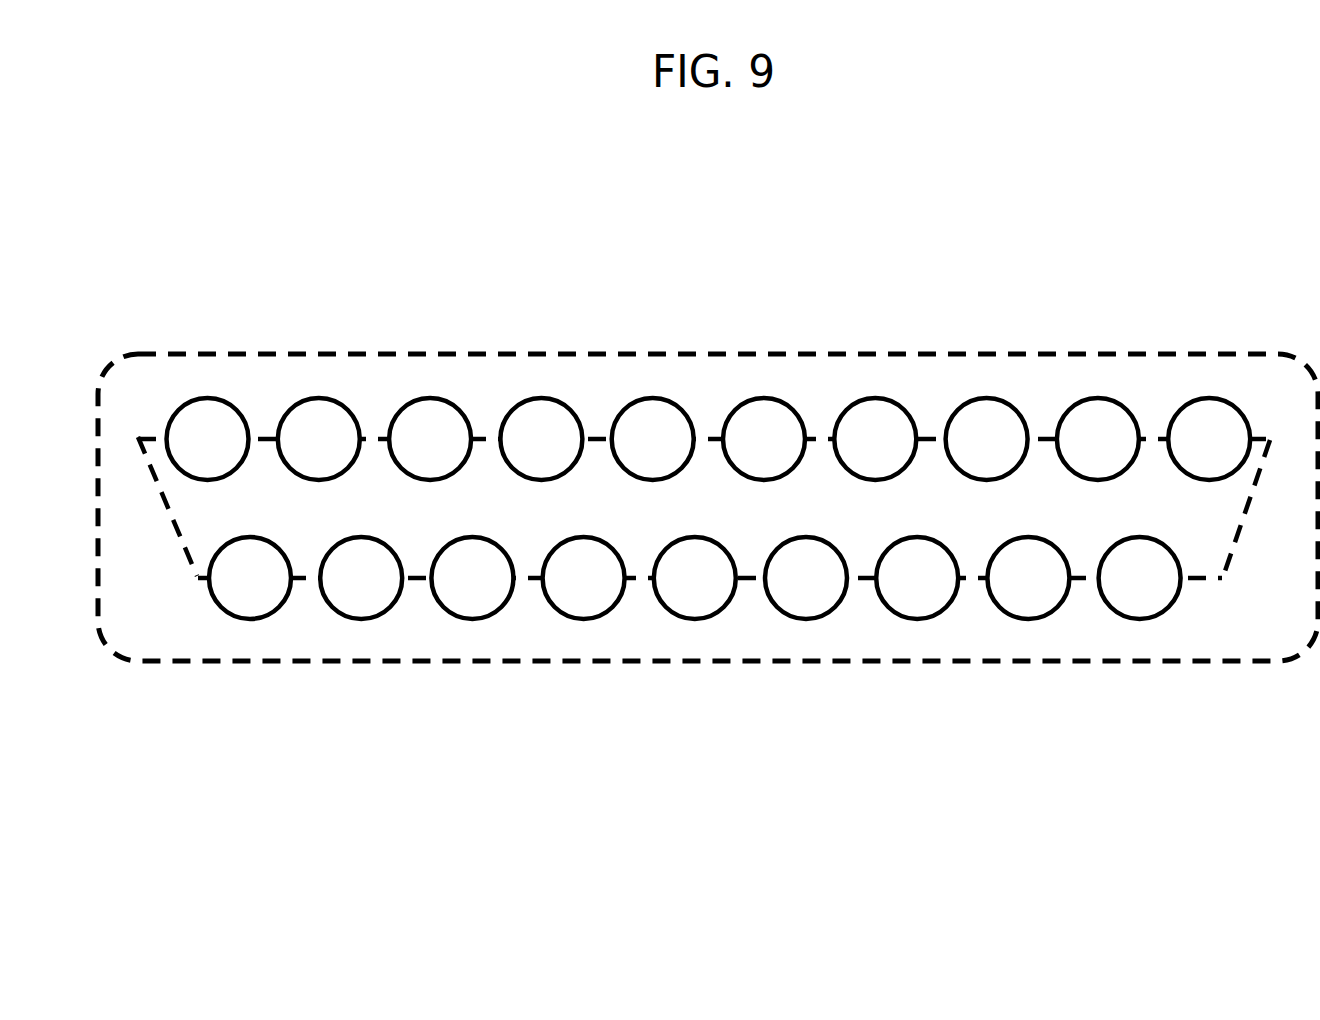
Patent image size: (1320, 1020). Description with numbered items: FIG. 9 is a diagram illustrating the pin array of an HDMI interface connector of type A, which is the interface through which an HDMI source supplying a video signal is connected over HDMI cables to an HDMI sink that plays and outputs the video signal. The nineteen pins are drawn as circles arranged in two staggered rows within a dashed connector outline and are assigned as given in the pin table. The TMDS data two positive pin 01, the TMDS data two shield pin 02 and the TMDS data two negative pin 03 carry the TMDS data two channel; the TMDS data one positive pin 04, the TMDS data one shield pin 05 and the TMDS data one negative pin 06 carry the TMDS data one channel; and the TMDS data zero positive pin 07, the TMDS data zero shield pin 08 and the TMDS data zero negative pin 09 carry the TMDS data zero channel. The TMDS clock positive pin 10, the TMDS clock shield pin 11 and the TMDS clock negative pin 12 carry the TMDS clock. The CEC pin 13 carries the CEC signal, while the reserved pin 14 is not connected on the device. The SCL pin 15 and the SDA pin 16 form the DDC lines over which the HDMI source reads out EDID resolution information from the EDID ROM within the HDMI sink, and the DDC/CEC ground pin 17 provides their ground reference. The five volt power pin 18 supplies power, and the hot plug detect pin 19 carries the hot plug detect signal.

The TMDS DATA 2+ pin 01 is at (1209, 439).
The TMDS DATA 2 SHIELD pin 02 is at (1140, 578).
The TMDS DATA 2− pin 03 is at (1098, 439).
The TMDS DATA 1+ pin 04 is at (1028, 578).
The TMDS DATA 1 SHIELD pin 05 is at (987, 439).
The TMDS DATA 1− pin 06 is at (917, 578).
The TMDS DATA 0+ pin 07 is at (875, 439).
The TMDS DATA 0 SHIELD pin 08 is at (806, 578).
The TMDS DATA 0− pin 09 is at (764, 439).
The TMDS CLOCK+ pin 10 is at (695, 578).
The TMDS CLOCK SHIELD pin 11 is at (653, 439).
The TMDS CLOCK− pin 12 is at (584, 578).
The CEC pin 13 is at (541, 439).
The RESERVED pin 14 is at (472, 578).
The SCL pin 15 is at (430, 439).
The SDA pin 16 is at (361, 578).
The DDC/CEC GROUND pin 17 is at (319, 439).
The +5 V POWER pin 18 is at (250, 578).
The HOT PLUG DETECT pin 19 is at (208, 439).